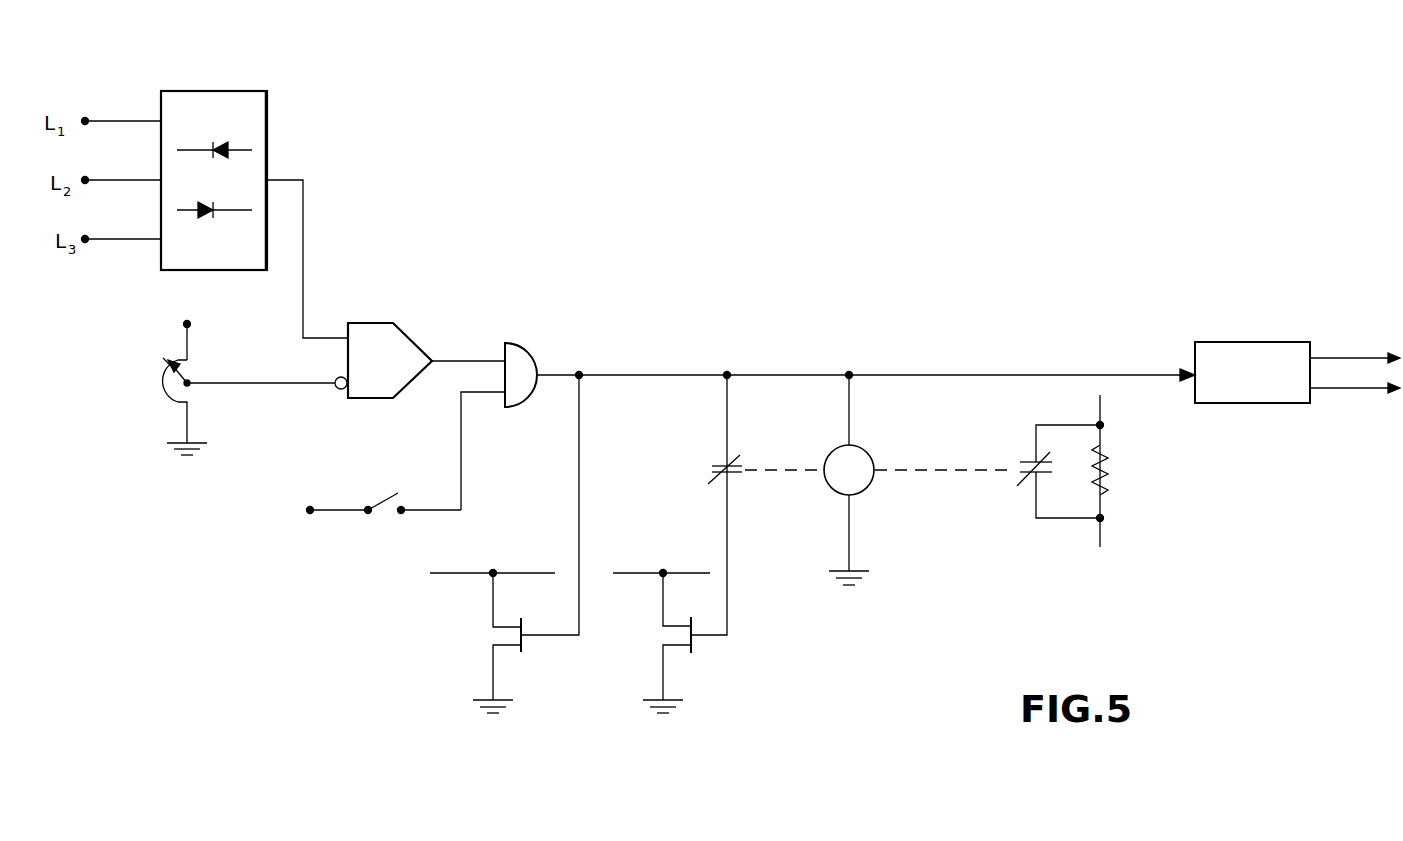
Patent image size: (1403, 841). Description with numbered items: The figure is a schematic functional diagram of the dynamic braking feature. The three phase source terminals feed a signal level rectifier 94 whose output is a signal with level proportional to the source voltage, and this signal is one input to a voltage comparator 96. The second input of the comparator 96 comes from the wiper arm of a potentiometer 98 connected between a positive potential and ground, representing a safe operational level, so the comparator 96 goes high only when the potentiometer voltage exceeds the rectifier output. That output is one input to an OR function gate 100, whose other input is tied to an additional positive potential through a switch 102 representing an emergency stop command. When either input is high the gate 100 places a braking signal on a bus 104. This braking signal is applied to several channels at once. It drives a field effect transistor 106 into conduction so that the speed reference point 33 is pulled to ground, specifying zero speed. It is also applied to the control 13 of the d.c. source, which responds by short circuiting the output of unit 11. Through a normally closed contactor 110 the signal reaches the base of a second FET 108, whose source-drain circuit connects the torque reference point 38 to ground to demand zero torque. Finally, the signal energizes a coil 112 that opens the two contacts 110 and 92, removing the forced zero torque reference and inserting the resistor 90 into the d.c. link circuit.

The signal level rectifier 94 is at (265, 90).
The voltage comparator 96 is at (393, 323).
The potentiometer 98 is at (162, 383).
The gate 100 is at (525, 345).
The switch 102 is at (391, 516).
The bus 104 is at (920, 374).
The field effect transistor 106 is at (528, 648).
The FET 108 is at (697, 648).
The normally closed contactor 110 is at (741, 457).
The coil 112 is at (866, 455).
The speed reference point 33 is at (493, 573).
The torque reference point 38 is at (663, 573).
The contact 92 is at (1030, 453).
The resistor 90 is at (1116, 458).
The control 13 is at (1258, 342).
The unit 11 is at (1362, 396).